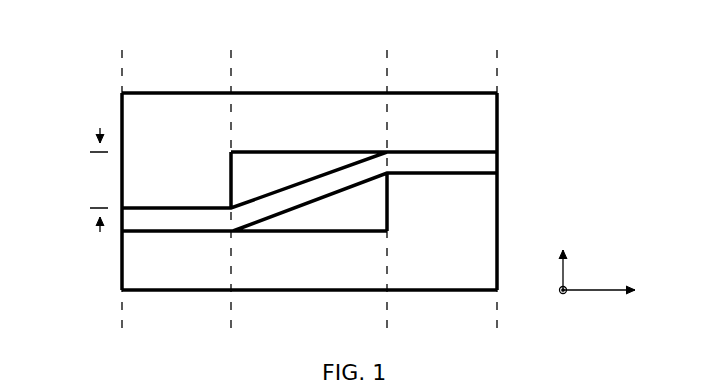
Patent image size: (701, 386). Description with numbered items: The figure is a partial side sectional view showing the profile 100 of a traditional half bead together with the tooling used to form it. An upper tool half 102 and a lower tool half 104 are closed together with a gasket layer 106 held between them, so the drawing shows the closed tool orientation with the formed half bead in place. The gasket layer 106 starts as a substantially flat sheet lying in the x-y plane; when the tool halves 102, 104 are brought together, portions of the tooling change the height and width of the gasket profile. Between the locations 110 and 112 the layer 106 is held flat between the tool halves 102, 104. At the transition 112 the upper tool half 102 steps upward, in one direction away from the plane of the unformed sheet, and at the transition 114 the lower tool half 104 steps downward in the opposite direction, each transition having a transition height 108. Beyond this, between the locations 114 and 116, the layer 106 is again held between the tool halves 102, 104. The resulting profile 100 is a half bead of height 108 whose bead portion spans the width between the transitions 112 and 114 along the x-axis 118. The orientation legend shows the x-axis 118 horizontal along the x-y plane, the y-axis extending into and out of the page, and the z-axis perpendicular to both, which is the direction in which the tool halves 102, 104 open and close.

The profile 100 is at (574, 106).
The upper tool half 102 is at (474, 129).
The lower tool half 104 is at (474, 273).
The gasket layer 106 is at (501, 162).
The transition height 108 is at (98, 130).
The flat portion boundary 110 is at (124, 72).
The upper tool transition 112 is at (233, 72).
The lower tool transition 114 is at (389, 72).
The flat portion boundary 116 is at (499, 73).
The x-axis 118 is at (588, 296).